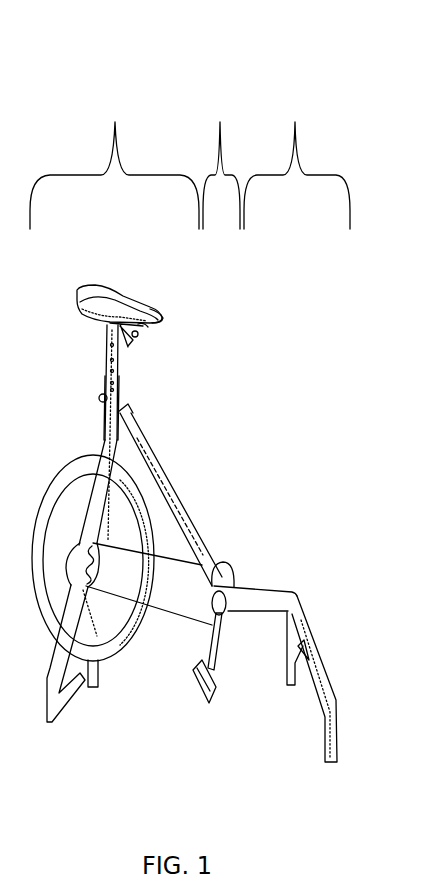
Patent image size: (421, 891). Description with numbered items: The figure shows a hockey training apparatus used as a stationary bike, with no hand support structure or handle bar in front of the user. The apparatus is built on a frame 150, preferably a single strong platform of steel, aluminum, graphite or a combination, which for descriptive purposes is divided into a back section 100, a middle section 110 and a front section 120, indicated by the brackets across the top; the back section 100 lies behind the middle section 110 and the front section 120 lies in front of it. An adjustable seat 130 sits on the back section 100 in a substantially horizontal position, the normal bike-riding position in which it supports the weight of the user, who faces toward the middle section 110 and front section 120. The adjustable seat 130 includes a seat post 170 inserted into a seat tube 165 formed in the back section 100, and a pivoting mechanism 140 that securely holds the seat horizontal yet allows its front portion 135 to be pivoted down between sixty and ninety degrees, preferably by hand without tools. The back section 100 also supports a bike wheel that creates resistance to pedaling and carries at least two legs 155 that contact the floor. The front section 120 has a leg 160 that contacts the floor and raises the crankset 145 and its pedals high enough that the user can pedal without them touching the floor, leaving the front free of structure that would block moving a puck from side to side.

The back section 100 is at (114, 155).
The middle section 110 is at (221, 155).
The front section 120 is at (297, 155).
The adjustable seat 130 is at (110, 287).
The front portion 135 is at (162, 317).
The pivoting mechanism 140 is at (138, 340).
The crankset 145 is at (243, 562).
The frame 150 is at (166, 502).
The legs 155 is at (54, 717).
The leg 160 is at (316, 689).
The seat tube 165 is at (111, 412).
The seat post 170 is at (104, 362).